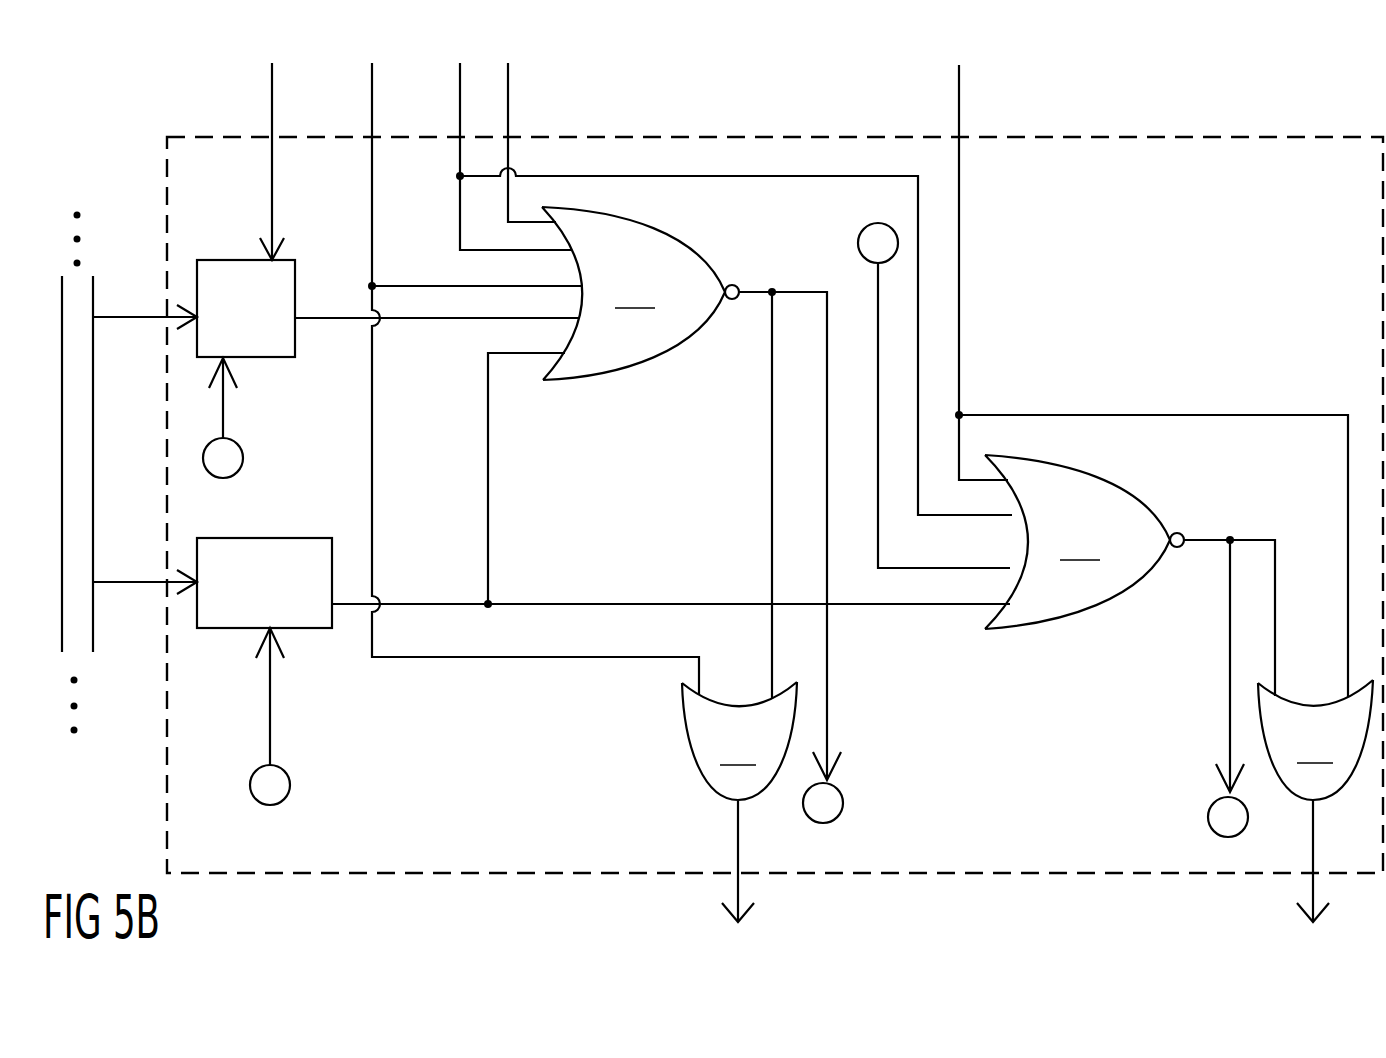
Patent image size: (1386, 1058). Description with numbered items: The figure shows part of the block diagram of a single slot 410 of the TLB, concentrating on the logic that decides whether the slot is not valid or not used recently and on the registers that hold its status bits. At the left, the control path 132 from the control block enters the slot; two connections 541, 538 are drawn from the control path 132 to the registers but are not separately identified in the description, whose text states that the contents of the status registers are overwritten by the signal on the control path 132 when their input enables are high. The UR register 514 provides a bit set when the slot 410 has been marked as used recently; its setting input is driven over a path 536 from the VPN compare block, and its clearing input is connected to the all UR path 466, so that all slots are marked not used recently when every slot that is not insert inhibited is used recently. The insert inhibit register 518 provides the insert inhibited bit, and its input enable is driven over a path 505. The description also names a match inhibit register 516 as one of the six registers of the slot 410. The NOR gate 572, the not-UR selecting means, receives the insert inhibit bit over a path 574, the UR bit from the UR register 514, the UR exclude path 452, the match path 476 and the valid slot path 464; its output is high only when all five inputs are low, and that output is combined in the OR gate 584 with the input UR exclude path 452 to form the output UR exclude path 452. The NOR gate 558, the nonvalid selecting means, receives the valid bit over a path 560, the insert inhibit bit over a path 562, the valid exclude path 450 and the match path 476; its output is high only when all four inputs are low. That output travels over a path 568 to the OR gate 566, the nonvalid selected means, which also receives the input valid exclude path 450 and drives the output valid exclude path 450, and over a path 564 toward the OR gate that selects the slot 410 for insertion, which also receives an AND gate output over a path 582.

The slot 410 is at (1348, 873).
The control path 132 is at (48, 474).
The control signal to UR register 541 is at (108, 318).
The control signal to insert inhibit register 538 is at (108, 582).
The UR register 514 is at (199, 262).
The path 536 is at (223, 427).
The insert inhibit register 518 is at (243, 538).
The path 505 is at (270, 738).
The all UR path 466 is at (272, 100).
The UR exclude path 452 is at (372, 121).
The match path 476 is at (460, 122).
The valid slot path 464 is at (537, 122).
The valid exclude path 450 is at (1313, 903).
The match inhibit register 516 is at (342, 313).
The path 574 is at (523, 357).
The path 562 is at (530, 604).
The NOR gate 572 is at (640, 293).
The path 560 is at (880, 307).
The path 582 is at (827, 740).
The NOR gate 558 is at (1084, 542).
The path 568 is at (1348, 508).
The path 564 is at (1230, 627).
The OR gate 566 is at (1315, 740).
The OR gate 584 is at (738, 903).